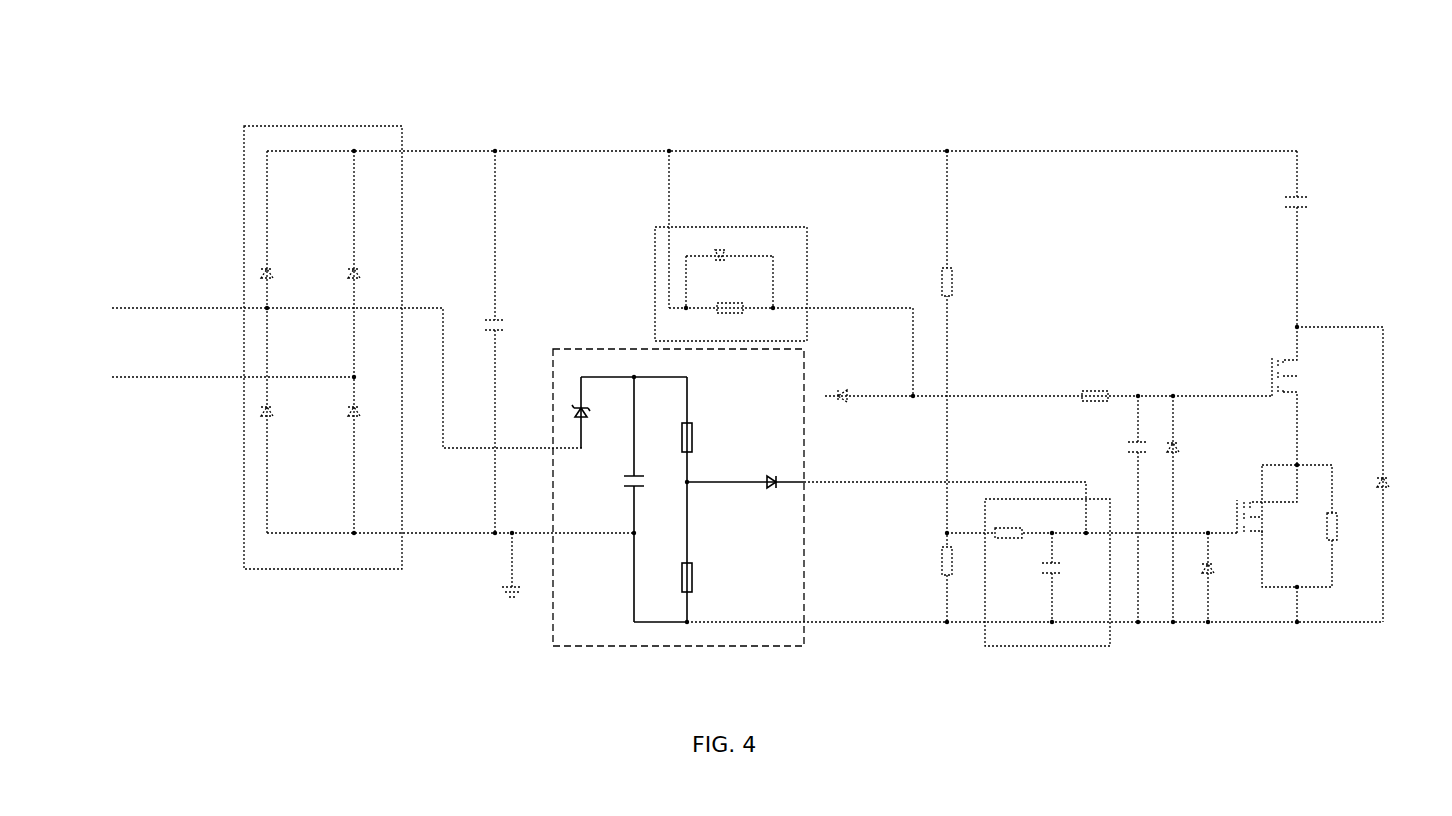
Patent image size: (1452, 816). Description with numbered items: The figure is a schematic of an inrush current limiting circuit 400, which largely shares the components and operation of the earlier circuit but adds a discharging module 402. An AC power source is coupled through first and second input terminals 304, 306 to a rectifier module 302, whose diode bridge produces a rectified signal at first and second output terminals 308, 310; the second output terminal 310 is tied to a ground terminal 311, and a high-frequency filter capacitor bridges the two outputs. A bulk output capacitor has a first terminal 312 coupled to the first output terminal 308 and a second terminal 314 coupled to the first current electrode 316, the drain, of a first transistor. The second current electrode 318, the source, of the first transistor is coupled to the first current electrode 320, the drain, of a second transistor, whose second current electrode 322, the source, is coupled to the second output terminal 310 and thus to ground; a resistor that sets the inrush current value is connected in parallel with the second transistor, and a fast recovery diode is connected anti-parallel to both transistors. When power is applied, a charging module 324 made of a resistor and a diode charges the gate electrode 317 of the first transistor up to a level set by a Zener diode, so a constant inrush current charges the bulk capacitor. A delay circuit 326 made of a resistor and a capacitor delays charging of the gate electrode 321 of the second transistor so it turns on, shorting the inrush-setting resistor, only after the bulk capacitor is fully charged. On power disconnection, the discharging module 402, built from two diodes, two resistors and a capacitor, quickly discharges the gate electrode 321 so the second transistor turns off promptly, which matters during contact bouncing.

The inrush current limiting circuit 400 is at (505, 98).
The rectifier module 302 is at (318, 126).
The first input terminal 304 is at (239, 299).
The second input terminal 306 is at (239, 391).
The first output terminal 308 is at (406, 158).
The second output terminal 310 is at (406, 532).
The ground terminal 311 is at (495, 609).
The first terminal of capacitor C2 312 is at (1285, 183).
The second terminal of capacitor C2 314 is at (1283, 228).
The first current electrode 316 is at (1305, 343).
The gate electrode 317 is at (1262, 377).
The second current electrode 318 is at (1305, 410).
The first current electrode 320 is at (1270, 490).
The gate electrode 321 is at (1232, 510).
The second current electrode 322 is at (1267, 552).
The charging module 324 is at (731, 227).
The delay circuit 326 is at (1048, 500).
The discharging module 402 is at (635, 349).